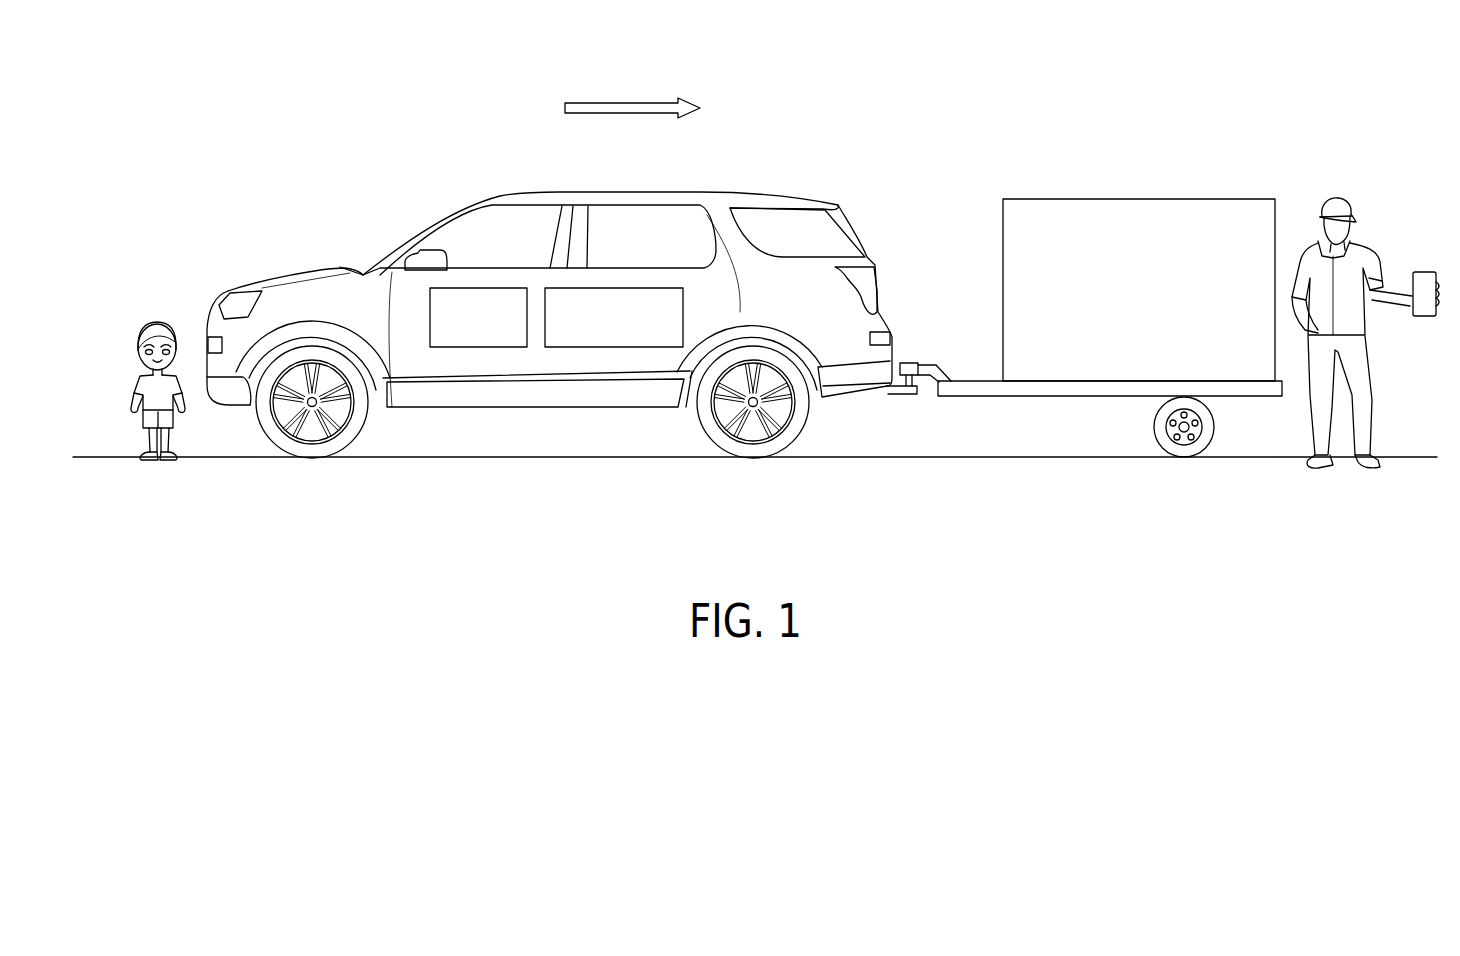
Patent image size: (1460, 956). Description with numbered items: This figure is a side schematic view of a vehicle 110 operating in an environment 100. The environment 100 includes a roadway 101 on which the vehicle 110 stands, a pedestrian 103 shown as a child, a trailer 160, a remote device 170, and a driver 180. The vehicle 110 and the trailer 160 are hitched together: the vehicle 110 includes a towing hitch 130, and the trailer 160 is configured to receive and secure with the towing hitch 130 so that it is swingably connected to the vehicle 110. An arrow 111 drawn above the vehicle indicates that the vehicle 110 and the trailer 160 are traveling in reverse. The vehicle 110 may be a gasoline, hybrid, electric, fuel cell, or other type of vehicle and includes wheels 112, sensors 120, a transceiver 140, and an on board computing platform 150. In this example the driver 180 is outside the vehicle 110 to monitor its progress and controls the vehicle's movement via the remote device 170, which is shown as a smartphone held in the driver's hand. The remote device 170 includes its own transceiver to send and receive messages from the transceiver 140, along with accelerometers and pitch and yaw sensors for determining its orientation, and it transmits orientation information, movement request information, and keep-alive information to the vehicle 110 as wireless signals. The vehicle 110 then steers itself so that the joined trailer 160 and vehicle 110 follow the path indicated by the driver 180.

The environment 100 is at (292, 70).
The roadway 101 is at (104, 456).
The pedestrian 103 is at (142, 314).
The vehicle 110 is at (448, 160).
The arrow 111 is at (620, 102).
The wheels 112 is at (300, 442).
The sensors 120 is at (209, 345).
The towing hitch 130 is at (907, 395).
The transceiver 140 is at (614, 317).
The on board computing platform (OBCP) 150 is at (478, 317).
The trailer 160 is at (1150, 156).
The remote device 170 is at (1422, 272).
The driver 180 is at (1341, 175).